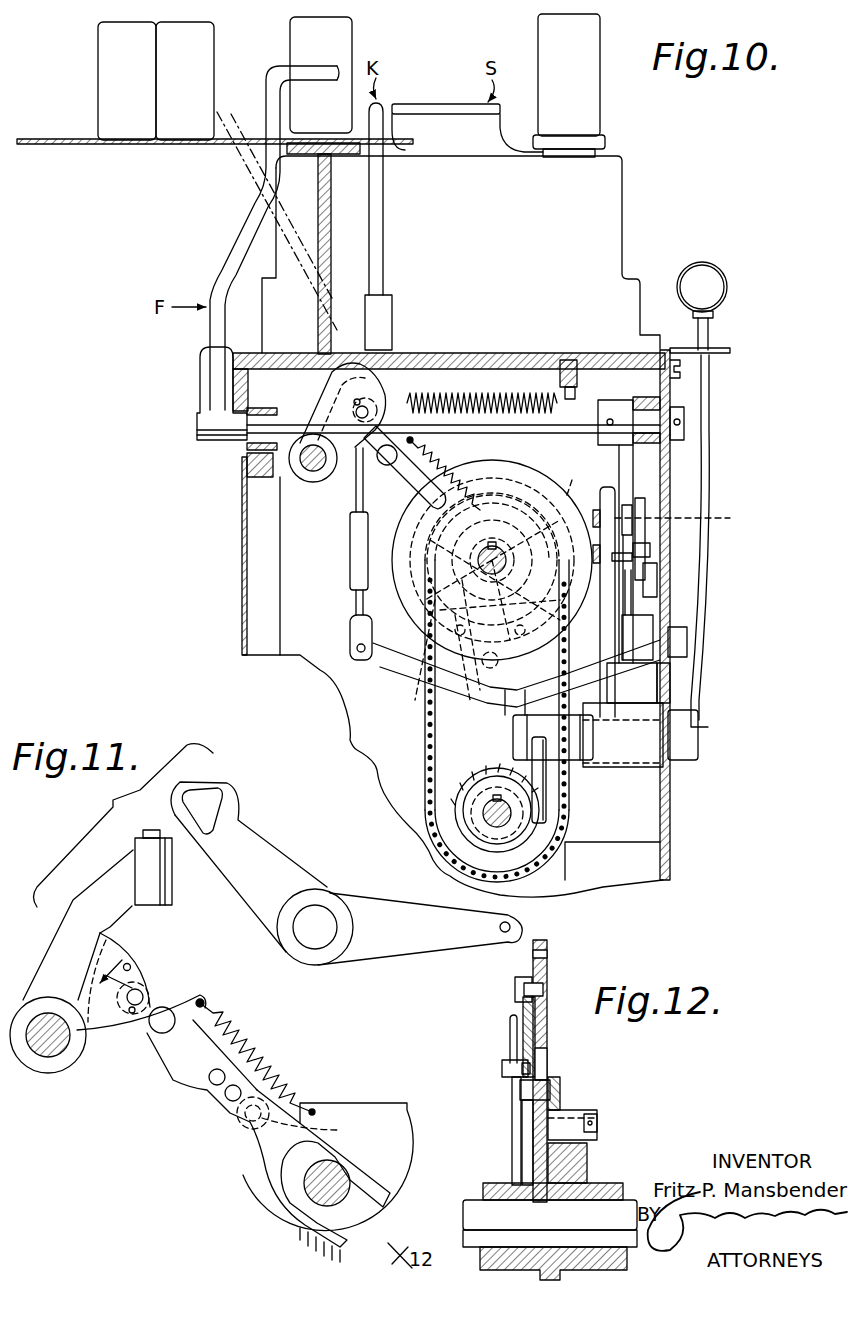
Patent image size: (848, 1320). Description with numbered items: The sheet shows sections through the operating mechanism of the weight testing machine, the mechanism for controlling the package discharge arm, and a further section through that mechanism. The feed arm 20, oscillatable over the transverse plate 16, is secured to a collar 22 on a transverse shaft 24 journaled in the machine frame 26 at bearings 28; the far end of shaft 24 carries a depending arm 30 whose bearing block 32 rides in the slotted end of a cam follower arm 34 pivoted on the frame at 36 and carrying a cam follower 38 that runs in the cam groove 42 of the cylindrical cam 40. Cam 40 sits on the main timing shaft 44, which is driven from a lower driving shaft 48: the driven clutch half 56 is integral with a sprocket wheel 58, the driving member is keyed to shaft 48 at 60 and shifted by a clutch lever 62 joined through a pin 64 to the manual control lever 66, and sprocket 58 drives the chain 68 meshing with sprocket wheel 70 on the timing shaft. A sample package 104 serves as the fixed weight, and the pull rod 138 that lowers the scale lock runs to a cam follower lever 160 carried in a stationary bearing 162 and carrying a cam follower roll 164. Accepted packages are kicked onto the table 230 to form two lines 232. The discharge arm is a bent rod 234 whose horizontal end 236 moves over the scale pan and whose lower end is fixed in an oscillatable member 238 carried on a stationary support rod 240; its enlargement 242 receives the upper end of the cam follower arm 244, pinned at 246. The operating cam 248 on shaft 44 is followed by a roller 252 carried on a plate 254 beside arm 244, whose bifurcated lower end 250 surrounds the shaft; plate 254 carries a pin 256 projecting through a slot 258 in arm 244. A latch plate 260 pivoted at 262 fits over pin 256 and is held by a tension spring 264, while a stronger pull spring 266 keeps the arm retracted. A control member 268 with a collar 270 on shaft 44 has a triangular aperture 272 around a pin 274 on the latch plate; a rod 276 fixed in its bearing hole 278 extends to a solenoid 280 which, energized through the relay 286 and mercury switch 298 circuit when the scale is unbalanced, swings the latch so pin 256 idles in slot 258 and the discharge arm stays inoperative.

In FIG. 10, the transverse plate 16 is at (403, 150).
In FIG. 10, the feed arm 20 is at (268, 68).
In FIG. 10, the collar 22 is at (200, 380).
In FIG. 10, the transverse oscillatable shaft 24 is at (292, 440).
In FIG. 10, the machine frame 26 is at (668, 480).
In FIG. 10, the bearings 28 is at (267, 398).
In FIG. 10, the depending arm 30 is at (622, 456).
In FIG. 10, the oscillatable bearing block 32 is at (601, 503).
In FIG. 10, the cam follower arm 34 is at (560, 694).
In FIG. 10, the stationary pivot 36 is at (628, 738).
In FIG. 10, the cam follower 38 is at (603, 652).
In FIG. 10, the cylindrical cam 40 is at (380, 656).
In FIG. 10, the cam groove 42 is at (418, 687).
In FIG. 10, the main timing shaft 44 is at (490, 566).
In FIG. 11, the main timing shaft 44 is at (328, 1160).
In FIG. 12, the main timing shaft 44 is at (615, 1213).
In FIG. 10, the driving shaft 48 is at (494, 828).
In FIG. 10, the driven clutch half 56 is at (466, 788).
In FIG. 10, the sprocket wheel 58 is at (430, 773).
In FIG. 10, the key 60 is at (520, 760).
In FIG. 10, the clutch lever 62 is at (563, 794).
In FIG. 10, the pin 64 is at (512, 736).
In FIG. 10, the control lever 66 is at (714, 328).
In FIG. 10, the chain 68 is at (426, 749).
In FIG. 10, the sprocket wheel 70 is at (464, 650).
In FIG. 10, the sample package 104 is at (583, 51).
In FIG. 10, the pull rod 138 is at (353, 612).
In FIG. 10, the cam follower lever 160 is at (430, 730).
In FIG. 10, the stationary bearing 162 is at (628, 640).
In FIG. 10, the cam follower roll 164 is at (516, 671).
In FIG. 10, the table 230 is at (133, 147).
In FIG. 10, the lines of accepted packages 232 is at (108, 60).
In FIG. 10, the bent rod 234 is at (386, 236).
In FIG. 10, the horizontal end of discharge arm 236 is at (386, 106).
In FIG. 10, the oscillatable member 238 is at (393, 327).
In FIG. 11, the oscillatable member 238 is at (102, 888).
In FIG. 10, the stationary support rod 240 is at (312, 472).
In FIG. 11, the stationary support rod 240 is at (50, 1060).
In FIG. 10, the enlargement of oscillatable member 242 is at (346, 455).
In FIG. 11, the enlargement of oscillatable member 242 is at (108, 1015).
In FIG. 10, the cam follower arm 244 is at (393, 410).
In FIG. 11, the cam follower arm 244 is at (161, 1014).
In FIG. 12, the cam follower arm 244 is at (548, 970).
In FIG. 10, the pin 246 is at (369, 409).
In FIG. 11, the pin 246 is at (142, 992).
In FIG. 10, the operating cam 248 is at (538, 470).
In FIG. 11, the operating cam 248 is at (390, 1172).
In FIG. 12, the operating cam 248 is at (580, 1165).
In FIG. 11, the bifurcated lower end 250 is at (343, 1240).
In FIG. 11, the cam roller 252 is at (242, 1158).
In FIG. 12, the cam roller 252 is at (575, 1110).
In FIG. 12, the plate 254 is at (556, 1094).
In FIG. 11, the pin 256 is at (230, 1103).
In FIG. 12, the pin 256 is at (512, 1106).
In FIG. 11, the slot 258 is at (210, 1082).
In FIG. 12, the slot 258 is at (545, 1064).
In FIG. 10, the latch plate 260 is at (396, 478).
In FIG. 11, the latch plate 260 is at (173, 1062).
In FIG. 12, the latch plate 260 is at (523, 1010).
In FIG. 11, the pivot 262 is at (203, 1000).
In FIG. 12, the pivot 262 is at (516, 989).
In FIG. 10, the tension spring 264 is at (433, 466).
In FIG. 11, the tension spring 264 is at (252, 1045).
In FIG. 10, the pull spring 266 is at (522, 384).
In FIG. 10, the latch control member 268 is at (578, 479).
In FIG. 11, the latch control member 268 is at (368, 955).
In FIG. 12, the latch control member 268 is at (512, 1141).
In FIG. 11, the collar 270 is at (300, 893).
In FIG. 12, the collar 270 is at (490, 1258).
In FIG. 11, the triangular aperture 272 is at (208, 788).
In FIG. 12, the triangular aperture 272 is at (510, 1036).
In FIG. 11, the pin 274 is at (213, 1092).
In FIG. 12, the pin 274 is at (504, 1068).
In FIG. 10, the rod 276 is at (623, 612).
In FIG. 11, the bearing hole 278 is at (500, 935).
In FIG. 10, the solenoid 280 is at (642, 685).
In FIG. 10, the relay coil 286 is at (635, 858).
In FIG. 10, the mercury switch 298 is at (689, 579).